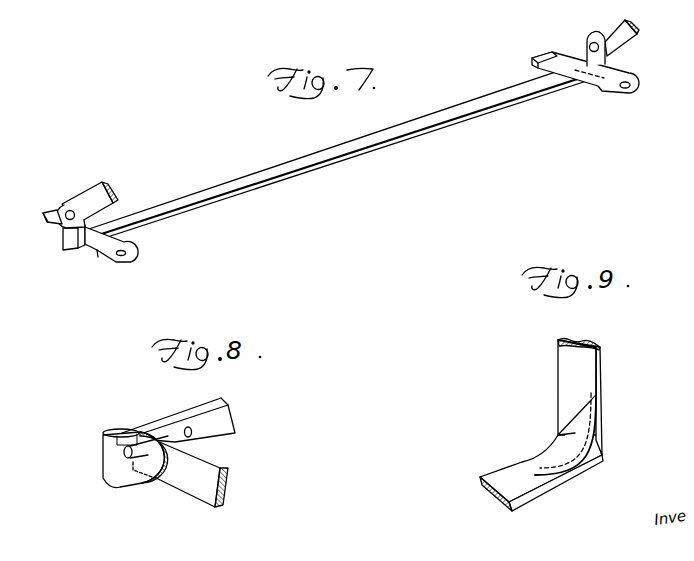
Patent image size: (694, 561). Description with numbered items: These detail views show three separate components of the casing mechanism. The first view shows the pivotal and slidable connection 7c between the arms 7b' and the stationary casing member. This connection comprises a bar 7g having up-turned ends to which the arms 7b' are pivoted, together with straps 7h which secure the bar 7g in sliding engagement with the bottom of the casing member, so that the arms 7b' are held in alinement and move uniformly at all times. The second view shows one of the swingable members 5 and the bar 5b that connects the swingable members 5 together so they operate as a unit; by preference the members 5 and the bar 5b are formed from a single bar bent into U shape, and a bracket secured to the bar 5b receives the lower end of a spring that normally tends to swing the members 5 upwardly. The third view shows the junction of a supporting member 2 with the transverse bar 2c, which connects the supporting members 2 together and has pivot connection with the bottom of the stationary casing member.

In FIG. 7, the bar 7g is at (298, 165).
In FIG. 7, the arm 7b' is at (358, 124).
In FIG. 7, the pivotal and slidable connection 7c is at (70, 236).
In FIG. 7, the strap 7h is at (99, 251).
In FIG. 8, the swingable member 5 is at (227, 480).
In FIG. 8, the bar 5b is at (230, 427).
In FIG. 9, the supporting member 2 is at (561, 394).
In FIG. 9, the transverse bar 2c is at (508, 473).